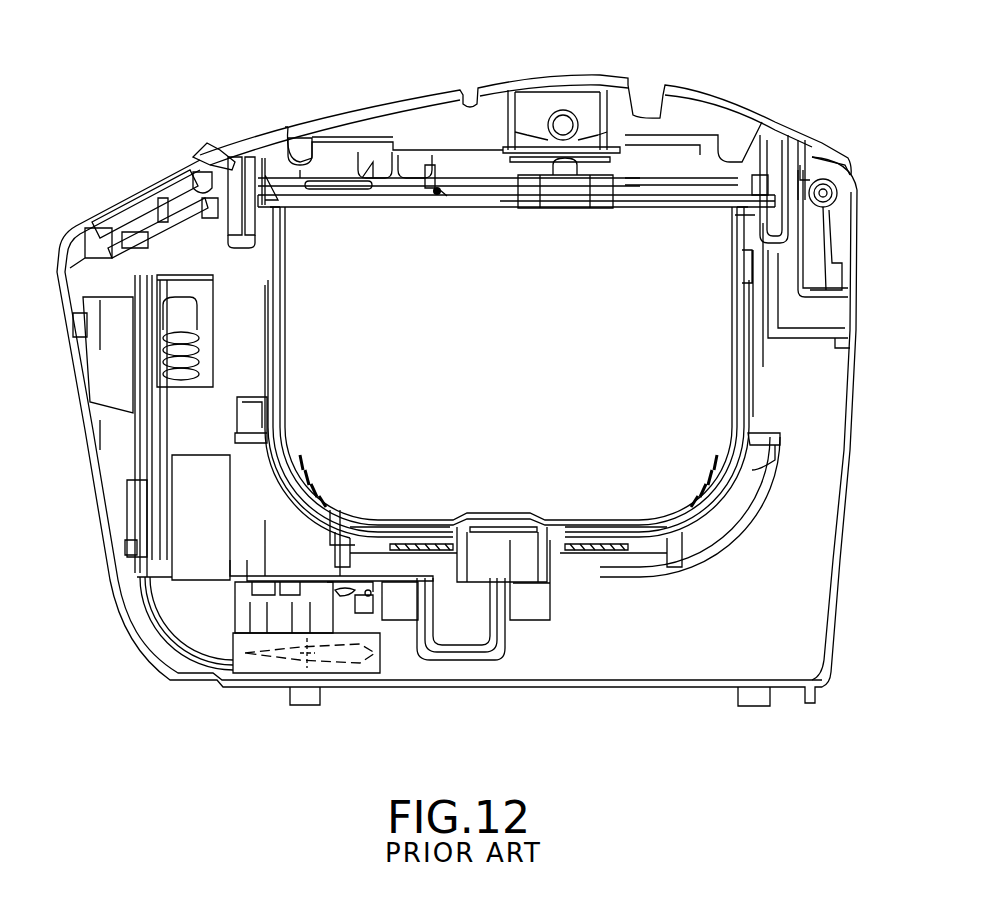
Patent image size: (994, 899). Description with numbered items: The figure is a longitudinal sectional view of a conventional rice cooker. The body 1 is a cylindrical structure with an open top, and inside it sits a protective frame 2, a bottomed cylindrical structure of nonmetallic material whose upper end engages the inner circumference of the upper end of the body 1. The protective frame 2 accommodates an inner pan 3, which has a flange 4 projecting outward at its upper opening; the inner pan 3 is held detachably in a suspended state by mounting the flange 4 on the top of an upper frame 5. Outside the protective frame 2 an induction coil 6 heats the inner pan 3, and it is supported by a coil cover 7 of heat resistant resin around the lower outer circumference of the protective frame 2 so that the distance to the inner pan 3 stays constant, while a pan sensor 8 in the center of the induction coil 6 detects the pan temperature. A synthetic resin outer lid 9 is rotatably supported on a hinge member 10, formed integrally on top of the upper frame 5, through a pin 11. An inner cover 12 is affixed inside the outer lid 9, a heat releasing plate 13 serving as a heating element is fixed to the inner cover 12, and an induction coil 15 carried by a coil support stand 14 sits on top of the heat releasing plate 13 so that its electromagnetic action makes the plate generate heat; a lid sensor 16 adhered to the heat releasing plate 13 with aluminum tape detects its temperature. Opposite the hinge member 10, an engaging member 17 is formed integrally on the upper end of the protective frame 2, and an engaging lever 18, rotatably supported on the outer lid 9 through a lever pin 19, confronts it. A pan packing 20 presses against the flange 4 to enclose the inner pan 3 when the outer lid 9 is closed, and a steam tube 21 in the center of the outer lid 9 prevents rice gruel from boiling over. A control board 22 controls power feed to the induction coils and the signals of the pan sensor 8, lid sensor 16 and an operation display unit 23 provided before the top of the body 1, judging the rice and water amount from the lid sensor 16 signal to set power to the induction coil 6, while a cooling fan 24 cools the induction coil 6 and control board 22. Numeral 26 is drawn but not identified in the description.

The body 1 is at (61, 318).
The protective frame 2 is at (340, 540).
The inner pan 3 is at (335, 540).
The flange 4 is at (280, 208).
The upper frame 5 is at (228, 241).
The induction coil 6 is at (735, 488).
The coil cover 7 is at (270, 520).
The pan sensor 8 is at (517, 557).
The outer lid 9 is at (325, 115).
The hinge member 10 is at (833, 175).
The pin 11 is at (827, 217).
The inner cover 12 is at (792, 152).
The heat releasing plate 13 is at (722, 207).
The coil support stand 14 is at (370, 180).
The induction coil 15 is at (312, 142).
The lid sensor 16 is at (435, 188).
The engaging member 17 is at (237, 170).
The engaging lever 18 is at (205, 150).
The lever pin 19 is at (193, 172).
The pan packing 20 is at (830, 165).
The steam tube 21 is at (558, 95).
The control board 22 is at (250, 582).
The operation display unit 23 is at (140, 202).
The cooling fan 24 is at (352, 672).
The display 26 is at (95, 235).